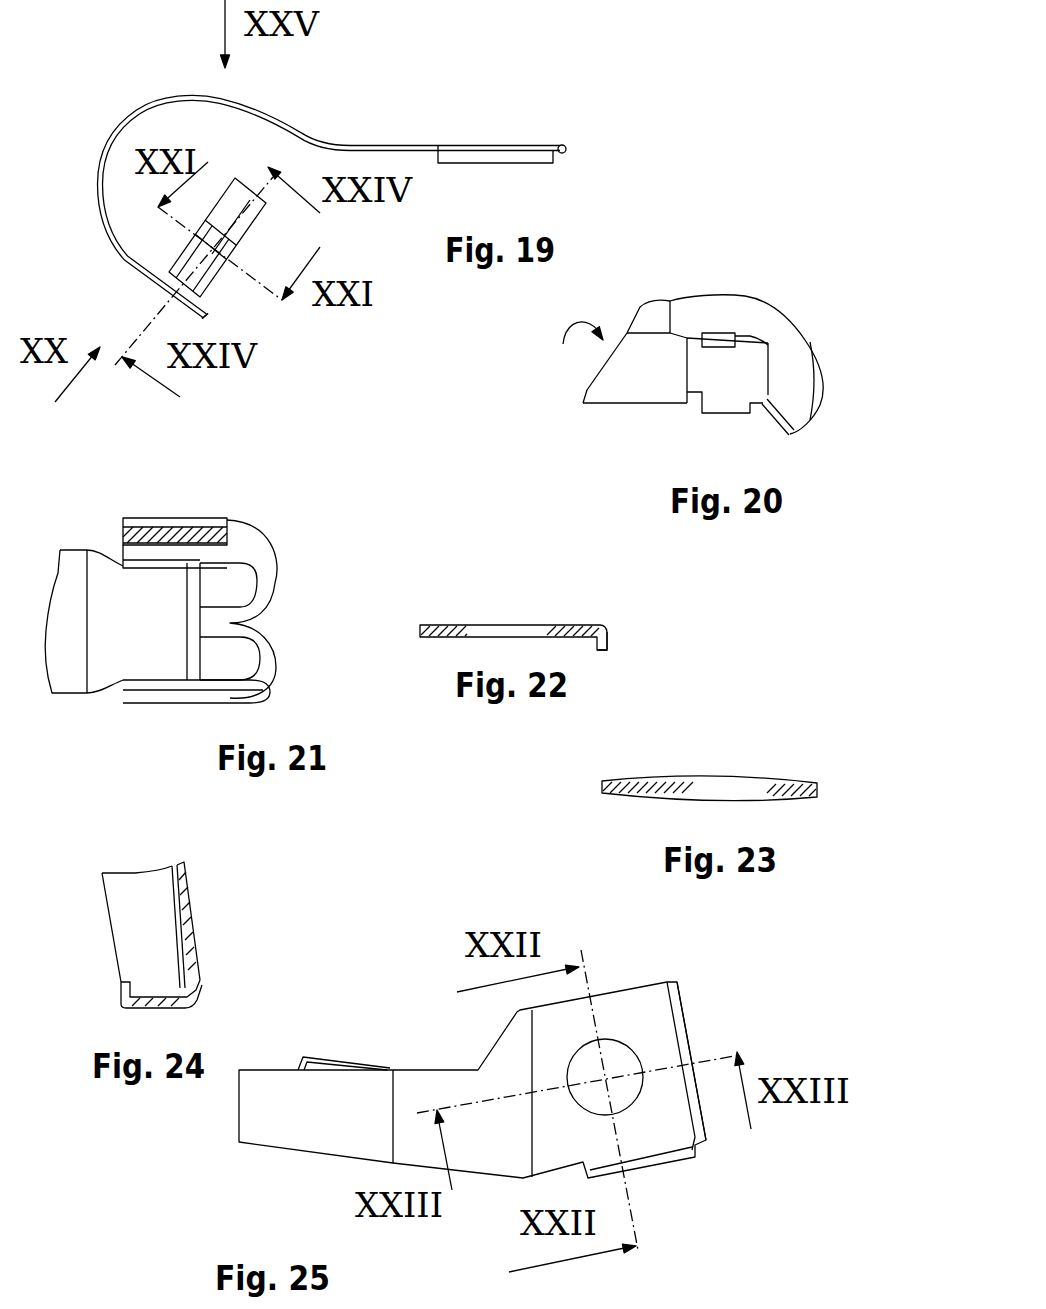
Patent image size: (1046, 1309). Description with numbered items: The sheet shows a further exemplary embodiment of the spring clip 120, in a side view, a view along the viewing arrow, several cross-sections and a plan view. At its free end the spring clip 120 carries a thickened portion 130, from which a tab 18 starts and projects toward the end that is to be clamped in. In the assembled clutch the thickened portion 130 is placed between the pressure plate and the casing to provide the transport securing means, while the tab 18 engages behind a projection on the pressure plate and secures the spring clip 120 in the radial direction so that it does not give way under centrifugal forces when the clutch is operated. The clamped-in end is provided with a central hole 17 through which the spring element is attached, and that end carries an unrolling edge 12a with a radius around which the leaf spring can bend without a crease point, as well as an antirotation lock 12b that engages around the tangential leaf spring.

In FIG. 19, the spring clip 120 is at (316, 140).
In FIG. 20, the spring clip 120 is at (636, 384).
In FIG. 24, the spring clip 120 is at (137, 933).
In FIG. 19, the unrolling edge 12a is at (559, 145).
In FIG. 25, the unrolling edge 12a is at (703, 1112).
In FIG. 22, the antirotation lock 12b is at (605, 652).
In FIG. 19, the tab 18 is at (258, 238).
In FIG. 21, the tab 18 is at (170, 530).
In FIG. 24, the tab 18 is at (193, 940).
In FIG. 25, the tab 18 is at (340, 1060).
In FIG. 19, the thickened portion 130 is at (206, 296).
In FIG. 22, the central hole 17 is at (520, 623).
In FIG. 23, the central hole 17 is at (730, 789).
In FIG. 25, the central hole 17 is at (623, 1062).